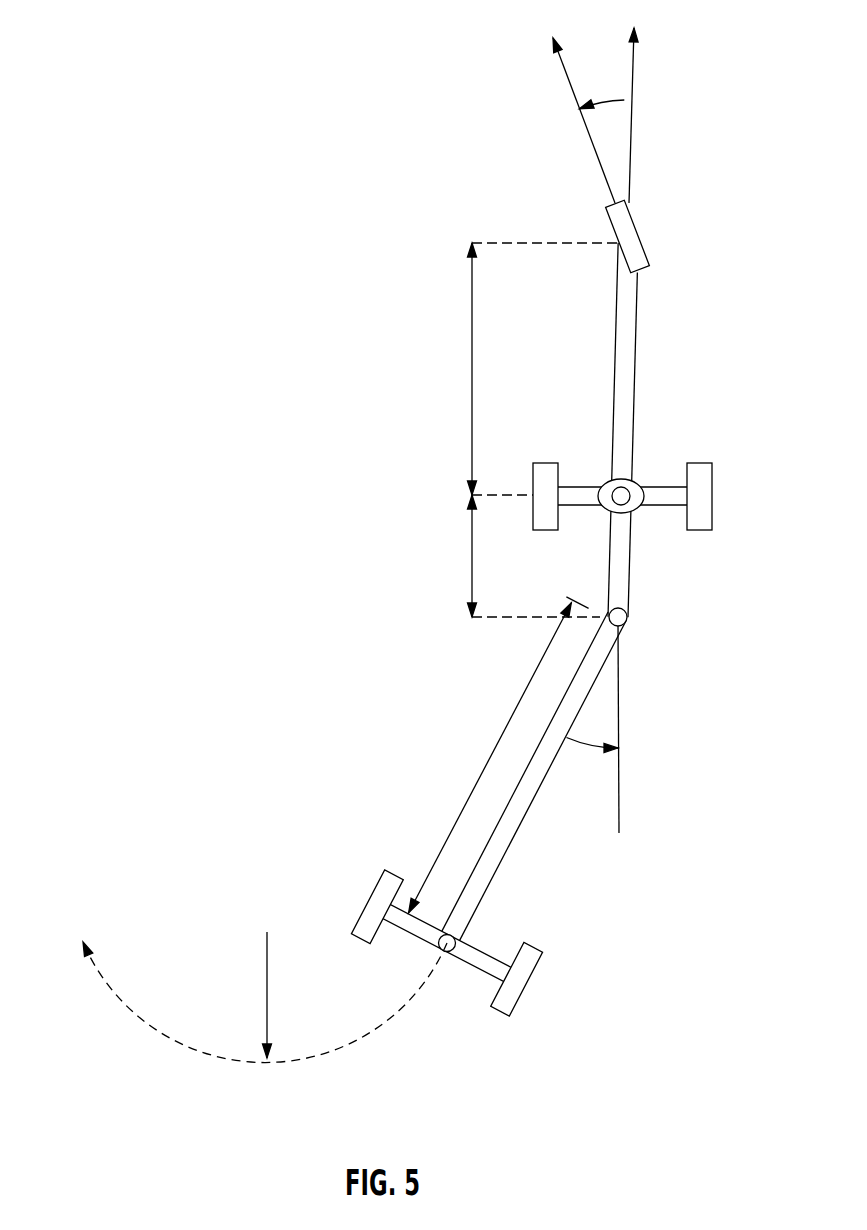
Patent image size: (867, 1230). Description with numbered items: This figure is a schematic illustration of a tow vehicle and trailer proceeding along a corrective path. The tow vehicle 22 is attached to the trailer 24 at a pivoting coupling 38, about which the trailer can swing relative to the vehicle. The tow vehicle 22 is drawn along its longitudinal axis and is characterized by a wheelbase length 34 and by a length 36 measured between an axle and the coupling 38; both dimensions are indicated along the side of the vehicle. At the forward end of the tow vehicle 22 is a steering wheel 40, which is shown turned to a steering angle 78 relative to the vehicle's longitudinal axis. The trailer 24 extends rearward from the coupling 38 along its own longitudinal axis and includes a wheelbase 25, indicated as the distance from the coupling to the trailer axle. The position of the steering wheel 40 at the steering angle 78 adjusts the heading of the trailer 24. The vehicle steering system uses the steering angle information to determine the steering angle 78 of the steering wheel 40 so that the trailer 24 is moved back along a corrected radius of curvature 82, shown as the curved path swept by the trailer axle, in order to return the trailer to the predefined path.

The tow vehicle 22 is at (628, 363).
The trailer 24 is at (513, 843).
The wheelbase 25 is at (500, 738).
The wheelbase length 34 is at (472, 346).
The length between an axle and the coupling 36 is at (472, 556).
The pivoting coupling 38 is at (630, 618).
The steering wheel 40 is at (638, 222).
The steering angle 78 is at (617, 96).
The corrected radius of curvature 82 is at (370, 890).